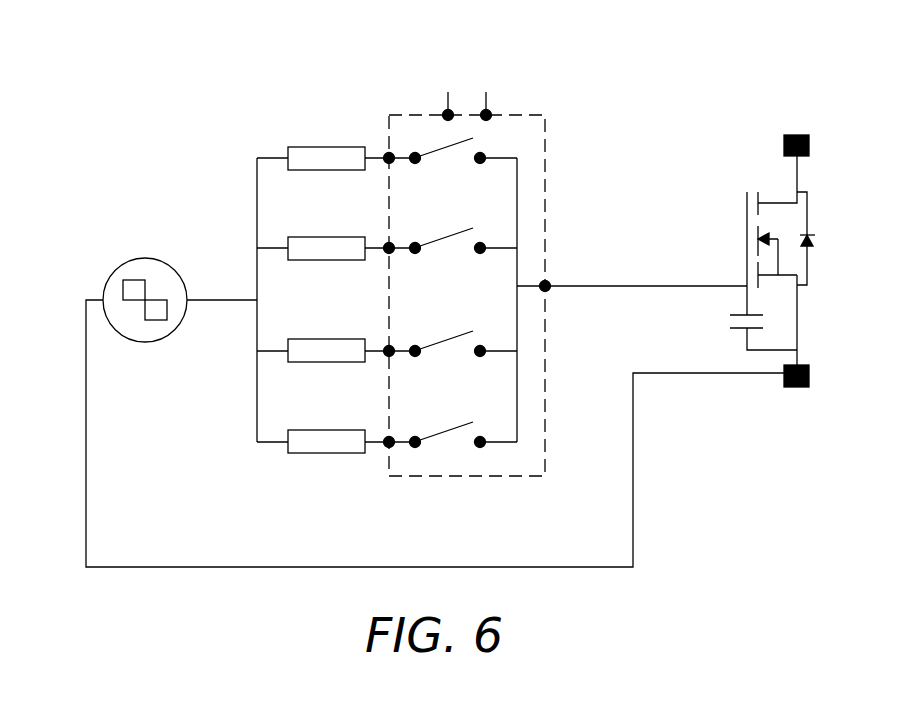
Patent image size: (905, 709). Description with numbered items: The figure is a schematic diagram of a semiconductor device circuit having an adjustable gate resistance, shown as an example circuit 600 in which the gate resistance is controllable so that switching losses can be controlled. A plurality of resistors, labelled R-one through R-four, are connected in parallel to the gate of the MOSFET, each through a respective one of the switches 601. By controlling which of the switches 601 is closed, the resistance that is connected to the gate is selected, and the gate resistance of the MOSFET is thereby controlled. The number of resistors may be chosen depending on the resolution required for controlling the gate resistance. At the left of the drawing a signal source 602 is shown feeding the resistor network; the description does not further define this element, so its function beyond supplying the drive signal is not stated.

The circuit 600 is at (150, 77).
The switches 601 is at (500, 157).
The signal source 602 is at (145, 258).